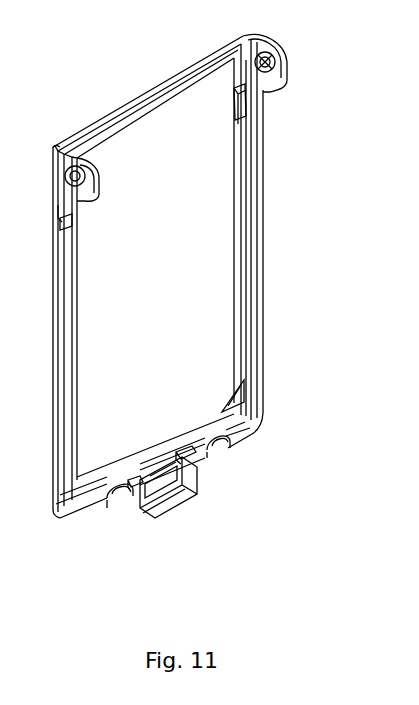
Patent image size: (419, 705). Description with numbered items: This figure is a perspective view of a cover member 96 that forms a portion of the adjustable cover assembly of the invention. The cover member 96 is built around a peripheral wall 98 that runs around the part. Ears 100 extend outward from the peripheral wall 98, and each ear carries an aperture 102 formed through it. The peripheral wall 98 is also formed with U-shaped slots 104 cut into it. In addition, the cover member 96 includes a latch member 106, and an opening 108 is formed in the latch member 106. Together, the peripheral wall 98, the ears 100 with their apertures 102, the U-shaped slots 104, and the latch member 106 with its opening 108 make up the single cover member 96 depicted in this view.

The cover member 96 is at (270, 298).
The peripheral wall 98 is at (252, 162).
The ears 100 is at (277, 78).
The apertures 102 is at (273, 57).
The U-shaped slots 104 is at (207, 453).
The latch member 106 is at (175, 508).
The opening 108 is at (158, 470).